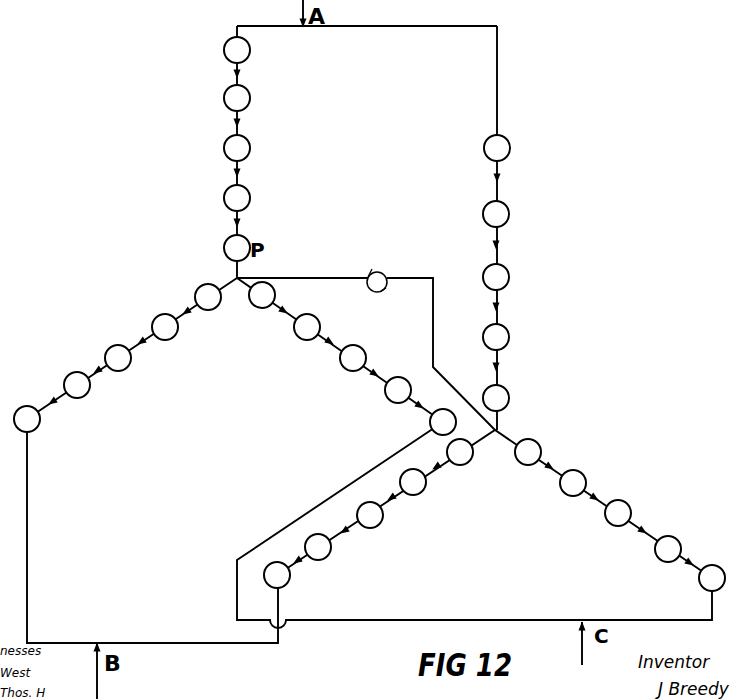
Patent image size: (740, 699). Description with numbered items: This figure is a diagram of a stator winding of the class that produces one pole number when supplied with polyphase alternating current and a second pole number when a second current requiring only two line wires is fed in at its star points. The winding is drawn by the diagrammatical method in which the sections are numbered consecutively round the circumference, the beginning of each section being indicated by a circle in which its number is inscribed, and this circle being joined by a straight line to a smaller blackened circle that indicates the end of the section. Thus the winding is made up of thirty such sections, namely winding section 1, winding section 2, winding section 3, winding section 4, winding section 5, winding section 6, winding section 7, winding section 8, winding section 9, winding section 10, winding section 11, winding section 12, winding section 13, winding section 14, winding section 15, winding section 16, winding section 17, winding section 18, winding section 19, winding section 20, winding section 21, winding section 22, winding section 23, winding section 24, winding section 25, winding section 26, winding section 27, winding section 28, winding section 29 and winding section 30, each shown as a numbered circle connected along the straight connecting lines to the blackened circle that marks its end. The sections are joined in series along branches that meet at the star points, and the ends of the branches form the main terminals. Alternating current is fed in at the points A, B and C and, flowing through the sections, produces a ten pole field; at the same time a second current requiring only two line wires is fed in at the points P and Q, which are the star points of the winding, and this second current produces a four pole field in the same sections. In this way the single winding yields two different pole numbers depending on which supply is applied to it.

The winding section 1 is at (497, 148).
The winding section 2 is at (118, 358).
The winding section 3 is at (712, 578).
The winding section 4 is at (237, 198).
The winding section 5 is at (277, 575).
The winding section 6 is at (618, 513).
The winding section 7 is at (237, 50).
The winding section 8 is at (413, 482).
The winding section 9 is at (443, 422).
The winding section 10 is at (496, 277).
The winding section 11 is at (27, 419).
The winding section 12 is at (573, 483).
The winding section 13 is at (237, 98).
The winding section 14 is at (165, 327).
The winding section 15 is at (668, 549).
The winding section 16 is at (237, 248).
The winding section 17 is at (318, 547).
The winding section 18 is at (262, 295).
The winding section 19 is at (496, 214).
The winding section 20 is at (208, 297).
The winding section 21 is at (398, 390).
The winding section 22 is at (496, 337).
The winding section 23 is at (77, 385).
The winding section 24 is at (528, 452).
The winding section 25 is at (237, 148).
The winding section 26 is at (460, 452).
The winding section 27 is at (353, 358).
The winding section 28 is at (496, 398).
The winding section 29 is at (370, 515).
The winding section 30 is at (307, 327).